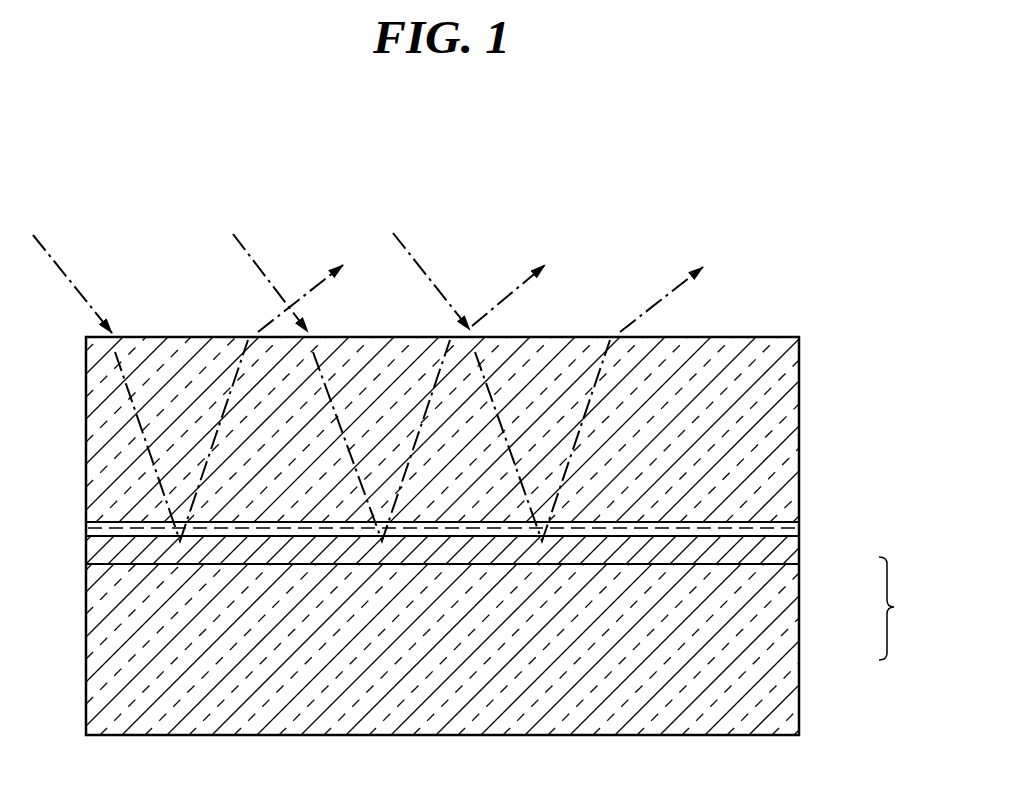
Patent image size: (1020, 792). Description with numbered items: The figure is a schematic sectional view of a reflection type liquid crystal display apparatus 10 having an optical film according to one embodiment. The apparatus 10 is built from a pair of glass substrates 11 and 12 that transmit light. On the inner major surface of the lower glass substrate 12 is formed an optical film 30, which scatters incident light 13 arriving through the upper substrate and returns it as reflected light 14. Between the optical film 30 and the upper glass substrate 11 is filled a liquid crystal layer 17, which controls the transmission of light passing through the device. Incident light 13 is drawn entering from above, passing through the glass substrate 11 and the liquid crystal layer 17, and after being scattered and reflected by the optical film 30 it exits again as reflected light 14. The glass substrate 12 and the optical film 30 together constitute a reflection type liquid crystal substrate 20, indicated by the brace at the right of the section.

The reflection type liquid crystal display apparatus 10 is at (747, 325).
The glass substrate 11 is at (795, 422).
The glass substrate 12 is at (793, 640).
The incident light 13 is at (46, 246).
The reflected light 14 is at (312, 289).
The liquid crystal layer 17 is at (795, 529).
The reflection type liquid crystal substrate 20 is at (903, 608).
The optical film 30 is at (793, 553).